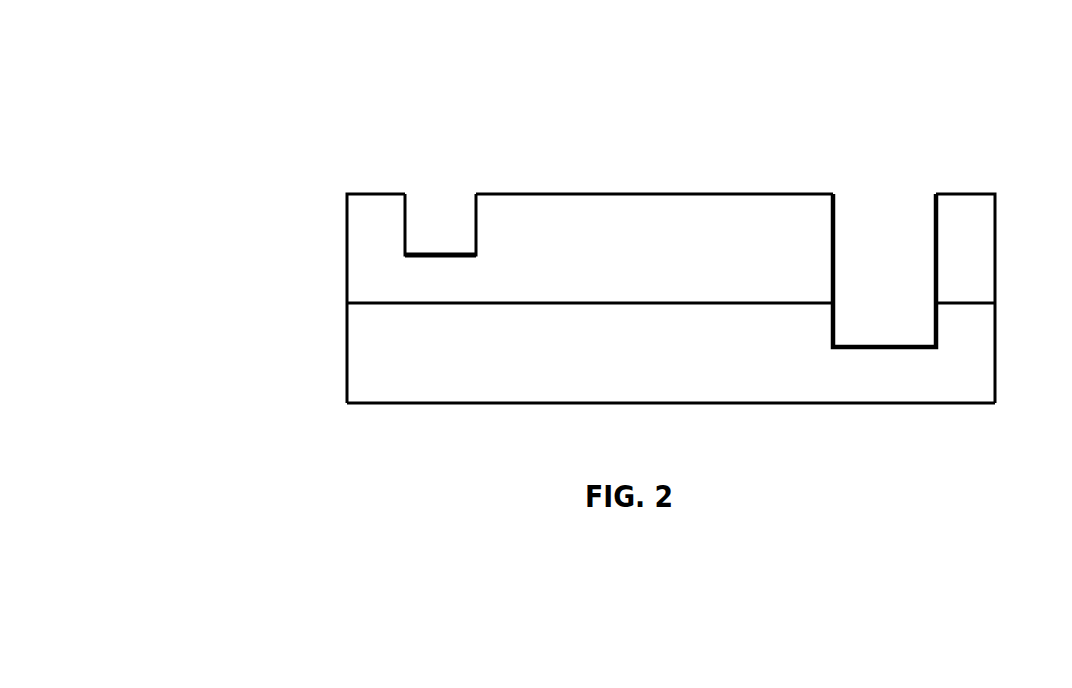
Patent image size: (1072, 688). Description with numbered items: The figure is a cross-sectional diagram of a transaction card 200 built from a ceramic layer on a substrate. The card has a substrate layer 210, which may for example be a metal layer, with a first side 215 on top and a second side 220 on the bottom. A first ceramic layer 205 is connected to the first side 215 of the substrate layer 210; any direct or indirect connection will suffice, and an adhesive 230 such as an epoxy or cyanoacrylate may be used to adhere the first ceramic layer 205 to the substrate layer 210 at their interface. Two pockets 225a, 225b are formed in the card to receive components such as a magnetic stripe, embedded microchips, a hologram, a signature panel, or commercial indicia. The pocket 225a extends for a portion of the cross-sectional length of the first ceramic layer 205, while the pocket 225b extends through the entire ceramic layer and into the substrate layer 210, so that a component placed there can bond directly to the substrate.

The transaction card 200 is at (370, 172).
The first ceramic layer 205 is at (345, 260).
The substrate layer 210 is at (345, 362).
The first side 215 is at (953, 298).
The second side 220 is at (887, 412).
The pocket 225a is at (437, 248).
The pocket 225b is at (857, 323).
The adhesive 230 is at (758, 298).